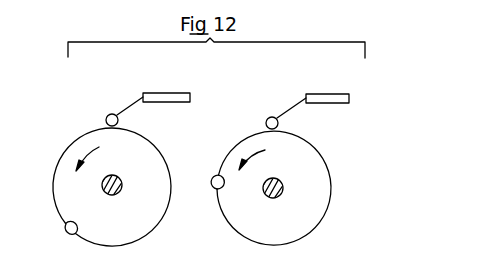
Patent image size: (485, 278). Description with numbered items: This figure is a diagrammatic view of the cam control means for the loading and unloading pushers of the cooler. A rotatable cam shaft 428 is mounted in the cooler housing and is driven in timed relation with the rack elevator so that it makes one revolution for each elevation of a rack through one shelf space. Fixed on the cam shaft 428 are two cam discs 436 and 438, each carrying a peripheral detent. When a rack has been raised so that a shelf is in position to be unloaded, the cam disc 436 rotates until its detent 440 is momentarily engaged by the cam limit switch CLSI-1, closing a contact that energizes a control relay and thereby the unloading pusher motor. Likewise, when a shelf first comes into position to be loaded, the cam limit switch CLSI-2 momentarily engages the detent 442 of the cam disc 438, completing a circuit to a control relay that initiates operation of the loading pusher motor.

The cam shaft 428 is at (112, 175).
The cam disc 436 is at (66, 153).
The cam disc 438 is at (328, 197).
The detent 440 is at (82, 226).
The detent 442 is at (221, 190).
The cam limit switch CLSI-1 is at (155, 98).
The cam limit switch CLSI-2 is at (315, 101).